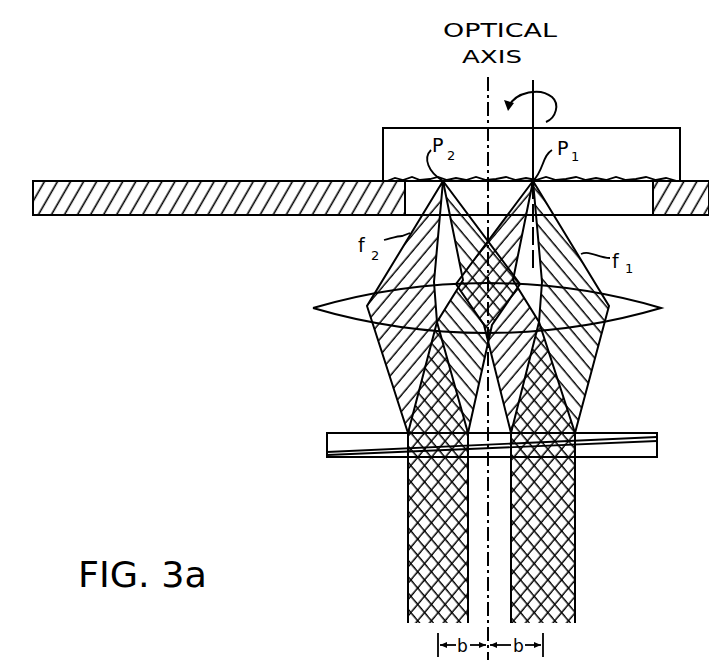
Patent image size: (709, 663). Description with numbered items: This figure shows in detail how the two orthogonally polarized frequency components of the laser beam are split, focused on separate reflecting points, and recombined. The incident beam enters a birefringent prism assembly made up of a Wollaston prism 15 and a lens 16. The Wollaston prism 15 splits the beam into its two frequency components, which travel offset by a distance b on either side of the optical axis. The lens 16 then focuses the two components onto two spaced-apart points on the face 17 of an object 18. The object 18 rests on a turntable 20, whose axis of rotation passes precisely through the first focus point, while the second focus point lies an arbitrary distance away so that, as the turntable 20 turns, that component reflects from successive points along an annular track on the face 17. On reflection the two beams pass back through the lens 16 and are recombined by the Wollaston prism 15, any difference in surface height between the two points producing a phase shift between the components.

The Wollaston prism 15 is at (327, 443).
The lens 16 is at (313, 308).
The face 17 is at (596, 185).
The object 18 is at (383, 151).
The turntable 20 is at (244, 158).